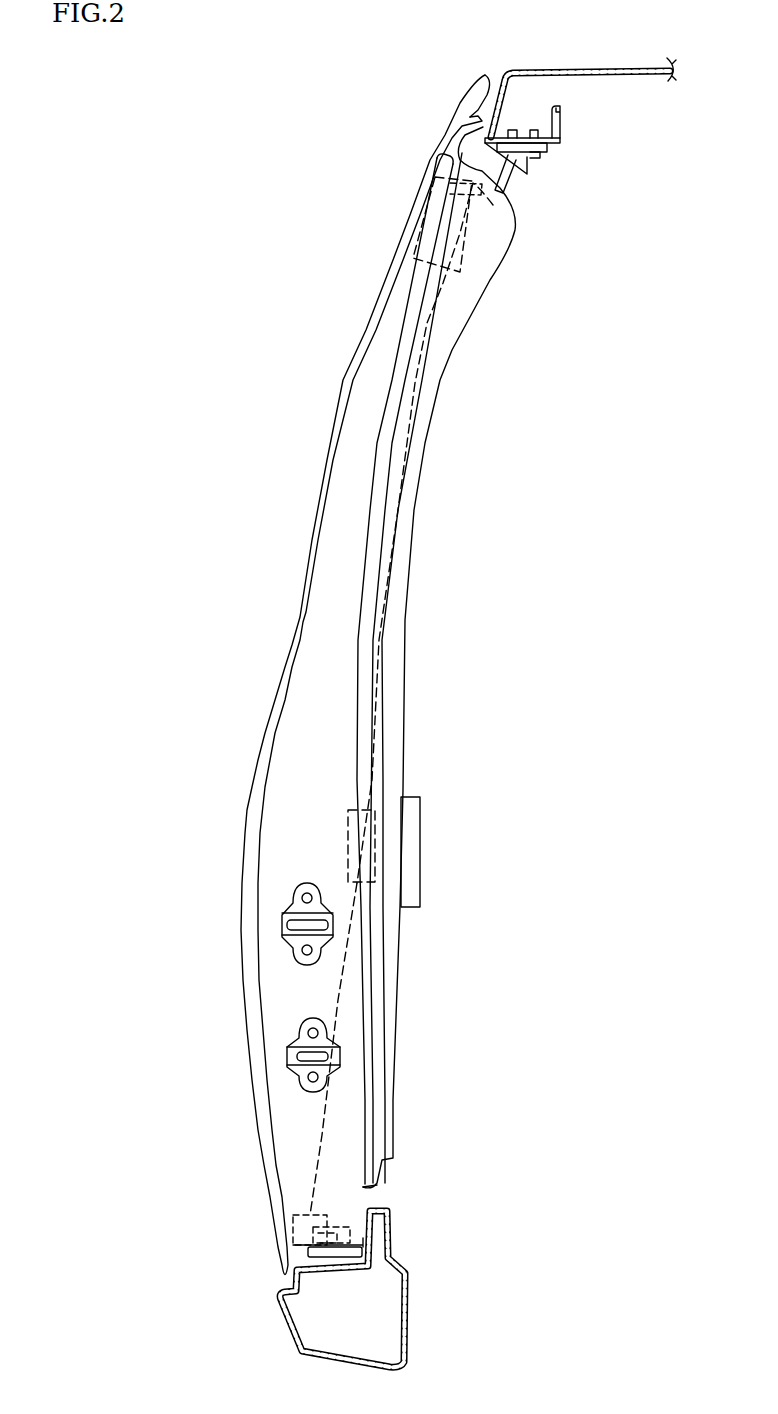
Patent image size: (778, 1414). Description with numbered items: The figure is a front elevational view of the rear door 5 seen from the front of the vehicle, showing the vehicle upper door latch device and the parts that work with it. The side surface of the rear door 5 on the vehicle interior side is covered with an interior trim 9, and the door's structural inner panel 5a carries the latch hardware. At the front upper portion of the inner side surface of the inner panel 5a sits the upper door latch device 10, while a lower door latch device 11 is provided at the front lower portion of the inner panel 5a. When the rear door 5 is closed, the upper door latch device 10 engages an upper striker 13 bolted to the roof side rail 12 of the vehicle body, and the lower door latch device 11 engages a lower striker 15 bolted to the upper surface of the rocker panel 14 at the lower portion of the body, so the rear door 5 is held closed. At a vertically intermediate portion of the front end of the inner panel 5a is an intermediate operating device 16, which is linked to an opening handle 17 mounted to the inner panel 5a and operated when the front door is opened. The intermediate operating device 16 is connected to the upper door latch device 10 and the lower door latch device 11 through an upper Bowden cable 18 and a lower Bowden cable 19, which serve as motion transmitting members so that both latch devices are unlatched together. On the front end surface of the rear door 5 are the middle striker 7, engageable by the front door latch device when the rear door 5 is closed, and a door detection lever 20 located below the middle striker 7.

The rear door 5 is at (293, 546).
The inner panel 5a is at (382, 720).
The middle striker 7 is at (292, 915).
The interior trim 9 is at (405, 620).
The upper door latch device 10 is at (425, 222).
The lower door latch device 11 is at (303, 1215).
The roof side rail 12 is at (563, 120).
The upper striker 13 is at (507, 180).
The rocker panel 14 is at (408, 1318).
The lower striker 15 is at (340, 1227).
The intermediate operating device 16 is at (348, 845).
The opening handle 17 is at (375, 842).
The upper Bowden cable 18 is at (415, 323).
The lower Bowden cable 19 is at (320, 1140).
The door detection lever 20 is at (293, 1045).